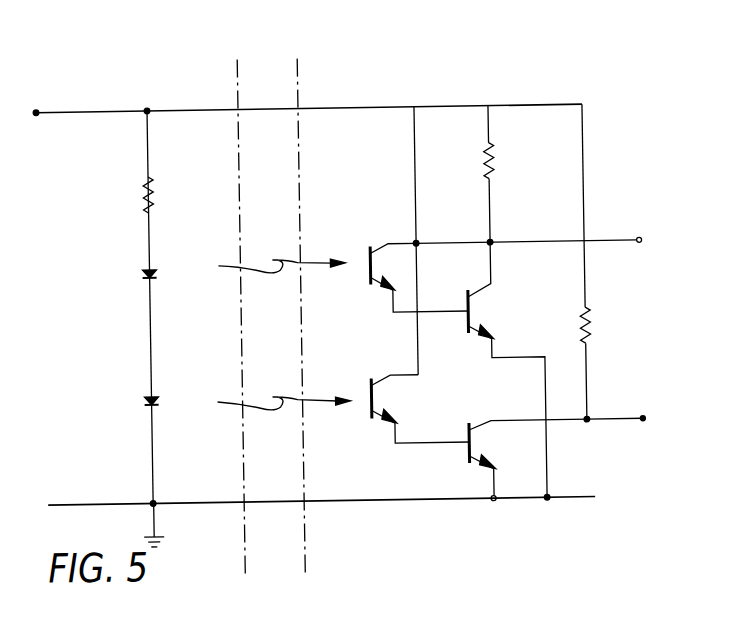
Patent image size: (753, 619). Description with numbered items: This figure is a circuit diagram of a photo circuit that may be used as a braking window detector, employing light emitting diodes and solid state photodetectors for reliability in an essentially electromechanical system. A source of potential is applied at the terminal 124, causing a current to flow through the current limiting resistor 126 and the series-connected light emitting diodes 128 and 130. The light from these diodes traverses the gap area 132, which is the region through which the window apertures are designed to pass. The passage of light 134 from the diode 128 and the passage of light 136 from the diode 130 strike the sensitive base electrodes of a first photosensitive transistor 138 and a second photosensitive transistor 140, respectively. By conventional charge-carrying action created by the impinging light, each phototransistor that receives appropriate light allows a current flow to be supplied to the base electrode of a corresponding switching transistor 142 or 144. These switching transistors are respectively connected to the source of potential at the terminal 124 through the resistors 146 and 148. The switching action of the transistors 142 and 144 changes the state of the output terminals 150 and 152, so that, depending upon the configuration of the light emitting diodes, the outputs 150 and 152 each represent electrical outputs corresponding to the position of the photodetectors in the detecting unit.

The supply voltage terminal (+V) 124 is at (37, 110).
The resistor 126 is at (150, 184).
The diode 128 is at (152, 272).
The diode 130 is at (152, 401).
The isolation boundary 132 is at (303, 76).
The coupling (signal path) 134 is at (303, 265).
The coupling (signal path) 136 is at (300, 404).
The transistor 138 is at (364, 252).
The transistor 140 is at (361, 385).
The transistor 142 is at (477, 270).
The transistor 144 is at (488, 406).
The resistor 146 is at (491, 164).
The resistor 148 is at (585, 328).
The output terminal 150 is at (638, 244).
The output terminal 152 is at (639, 423).